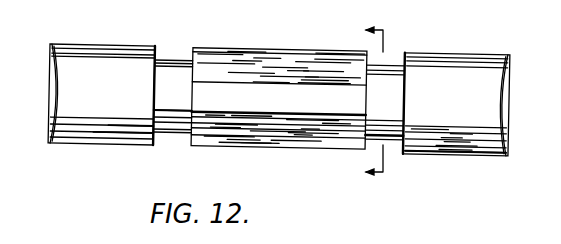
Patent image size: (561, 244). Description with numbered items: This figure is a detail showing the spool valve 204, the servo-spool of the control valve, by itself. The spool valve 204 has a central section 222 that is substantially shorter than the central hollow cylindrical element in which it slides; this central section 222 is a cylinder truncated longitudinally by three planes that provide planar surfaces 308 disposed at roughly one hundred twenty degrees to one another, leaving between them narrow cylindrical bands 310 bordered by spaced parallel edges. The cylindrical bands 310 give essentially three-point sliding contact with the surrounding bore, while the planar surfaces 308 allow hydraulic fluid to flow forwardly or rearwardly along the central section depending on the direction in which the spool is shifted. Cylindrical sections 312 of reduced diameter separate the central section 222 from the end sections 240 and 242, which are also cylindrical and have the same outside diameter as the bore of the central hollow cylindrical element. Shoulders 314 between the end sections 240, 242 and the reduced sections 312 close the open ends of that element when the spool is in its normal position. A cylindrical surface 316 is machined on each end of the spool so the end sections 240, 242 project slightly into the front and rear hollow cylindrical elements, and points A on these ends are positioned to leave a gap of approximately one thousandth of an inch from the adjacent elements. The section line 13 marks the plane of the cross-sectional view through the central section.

The end section 242 is at (93, 50).
The end section 240 is at (456, 67).
The spool valve 204 is at (230, 55).
The central section 222 is at (328, 56).
The cylindrical bands 310 is at (231, 108).
The planar surfaces 308 is at (275, 66).
The cylindrical sections of reduced diameter 312 is at (168, 66).
The shoulders 314 is at (156, 144).
The cylindrical surface 316 is at (49, 98).
The points A is at (53, 92).
The section line 13- 13 is at (380, 100).